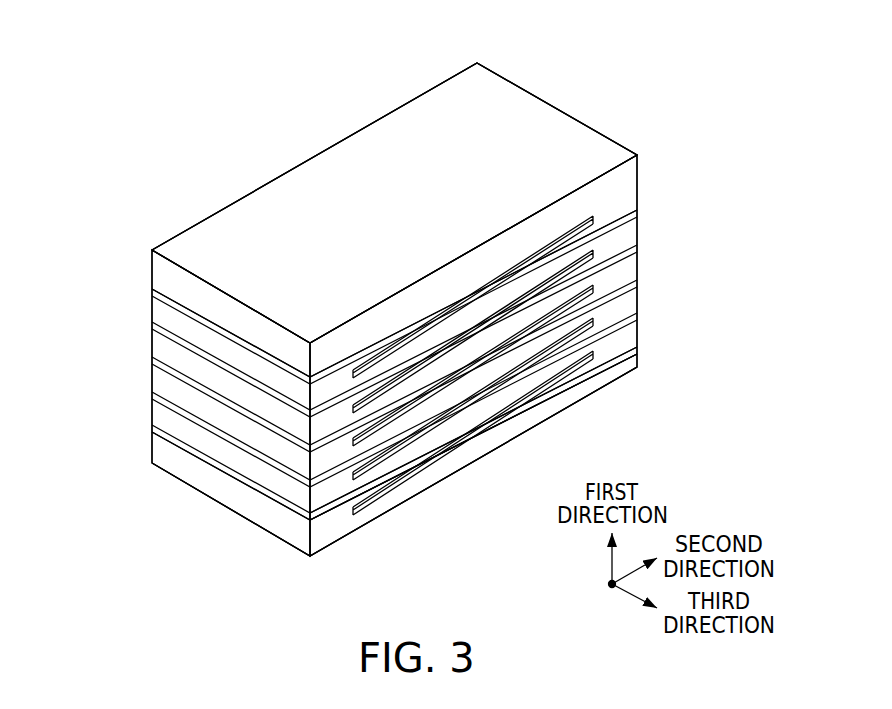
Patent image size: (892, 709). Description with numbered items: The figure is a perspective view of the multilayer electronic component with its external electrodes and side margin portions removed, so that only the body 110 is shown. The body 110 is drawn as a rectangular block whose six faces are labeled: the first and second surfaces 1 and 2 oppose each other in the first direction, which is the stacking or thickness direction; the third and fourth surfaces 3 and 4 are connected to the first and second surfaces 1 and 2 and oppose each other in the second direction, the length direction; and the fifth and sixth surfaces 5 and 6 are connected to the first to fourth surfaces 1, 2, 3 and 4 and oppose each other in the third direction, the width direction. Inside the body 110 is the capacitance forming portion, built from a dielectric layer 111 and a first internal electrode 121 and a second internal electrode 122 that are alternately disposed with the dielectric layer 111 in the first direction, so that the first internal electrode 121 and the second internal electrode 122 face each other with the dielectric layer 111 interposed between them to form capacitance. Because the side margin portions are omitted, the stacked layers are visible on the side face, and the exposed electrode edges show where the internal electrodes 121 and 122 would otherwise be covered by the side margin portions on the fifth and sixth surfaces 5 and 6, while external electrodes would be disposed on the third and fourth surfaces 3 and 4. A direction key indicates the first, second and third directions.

The first surface 1 is at (433, 472).
The second surface 2 is at (435, 123).
The third surface 3 is at (202, 470).
The fourth surface 4 is at (548, 140).
The fifth surface 5 is at (228, 235).
The sixth surface 6 is at (605, 345).
The body 110 is at (368, 162).
The dielectric layer 111 is at (178, 388).
The first internal electrode 121 is at (172, 342).
The second internal electrode 122 is at (630, 250).